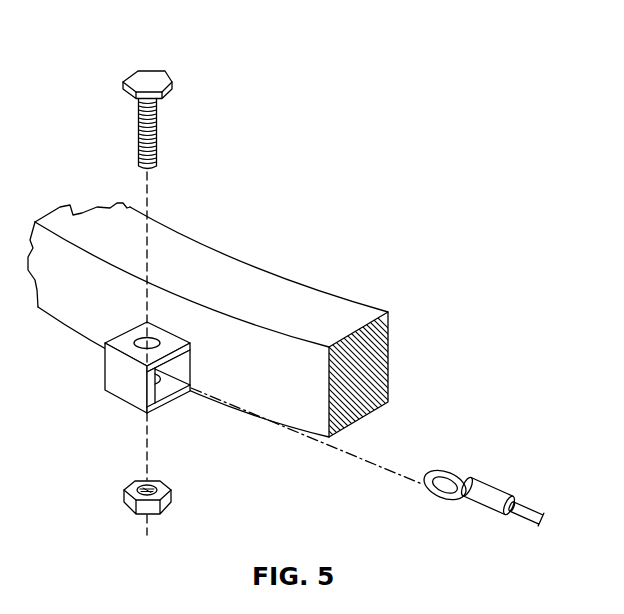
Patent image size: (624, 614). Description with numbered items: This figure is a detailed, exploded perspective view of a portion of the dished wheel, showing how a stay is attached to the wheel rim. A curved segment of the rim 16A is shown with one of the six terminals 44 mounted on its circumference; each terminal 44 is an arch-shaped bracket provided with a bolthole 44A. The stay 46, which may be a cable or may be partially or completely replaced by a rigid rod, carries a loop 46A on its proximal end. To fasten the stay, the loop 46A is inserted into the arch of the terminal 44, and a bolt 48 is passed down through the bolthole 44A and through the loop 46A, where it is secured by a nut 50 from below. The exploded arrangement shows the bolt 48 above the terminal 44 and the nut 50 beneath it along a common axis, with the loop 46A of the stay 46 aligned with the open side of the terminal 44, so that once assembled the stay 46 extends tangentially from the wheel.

The rim 16A is at (211, 249).
The terminal 44 is at (122, 387).
The bolthole 44A is at (118, 346).
The stay 46 is at (523, 506).
The loop 46A is at (444, 470).
The bolt 48 is at (150, 68).
The nut 50 is at (171, 490).